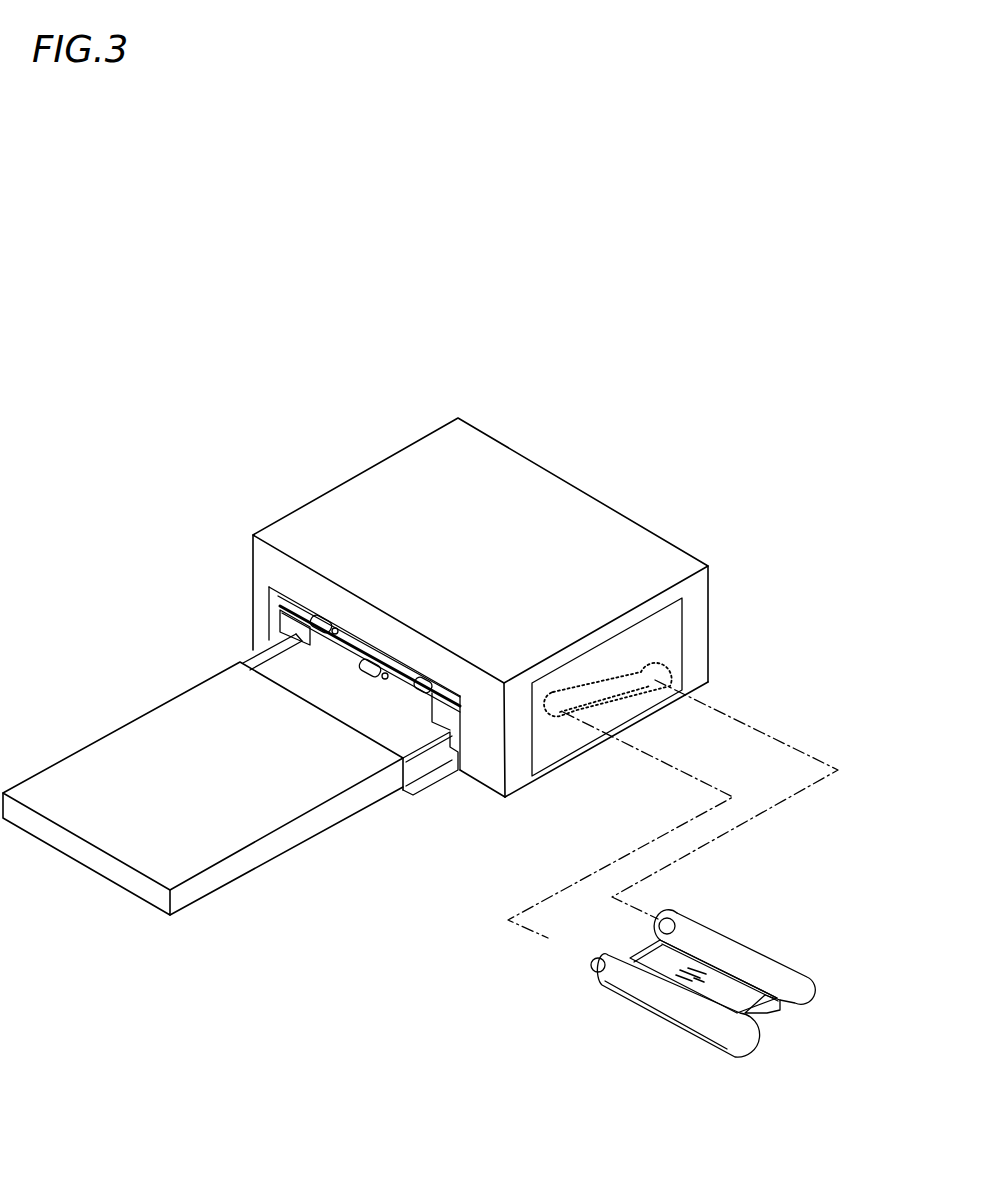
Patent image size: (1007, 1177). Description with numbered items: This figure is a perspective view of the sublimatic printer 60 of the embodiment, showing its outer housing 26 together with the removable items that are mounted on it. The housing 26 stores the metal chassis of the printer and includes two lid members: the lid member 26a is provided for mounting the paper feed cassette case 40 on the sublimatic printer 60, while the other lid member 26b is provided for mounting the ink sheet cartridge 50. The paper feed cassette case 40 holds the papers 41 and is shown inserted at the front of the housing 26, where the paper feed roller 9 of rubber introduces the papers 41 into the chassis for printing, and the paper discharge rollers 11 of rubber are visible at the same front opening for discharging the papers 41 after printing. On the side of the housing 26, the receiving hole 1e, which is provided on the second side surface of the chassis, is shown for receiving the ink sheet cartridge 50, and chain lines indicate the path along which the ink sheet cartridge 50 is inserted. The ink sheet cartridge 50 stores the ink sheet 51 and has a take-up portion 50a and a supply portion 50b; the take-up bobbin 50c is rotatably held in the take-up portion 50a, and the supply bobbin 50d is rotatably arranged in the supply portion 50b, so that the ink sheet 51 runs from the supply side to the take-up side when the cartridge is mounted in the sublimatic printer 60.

The sublimatic printer 60 is at (238, 507).
The housing 26 is at (593, 528).
The lid member 26a is at (443, 767).
The lid member 26b is at (676, 635).
The receiving hole 1e is at (558, 715).
The paper discharge rollers 11 is at (320, 612).
The paper feed roller 9 is at (350, 670).
The paper feed cassette case 40 is at (207, 715).
The papers 41 is at (287, 677).
The ink sheet cartridge 50 is at (565, 1052).
The take-up portion 50a is at (660, 998).
The supply portion 50b is at (717, 942).
The take-up bobbin 50c is at (597, 963).
The supply bobbin 50d is at (668, 915).
The ink sheet 51 is at (733, 998).